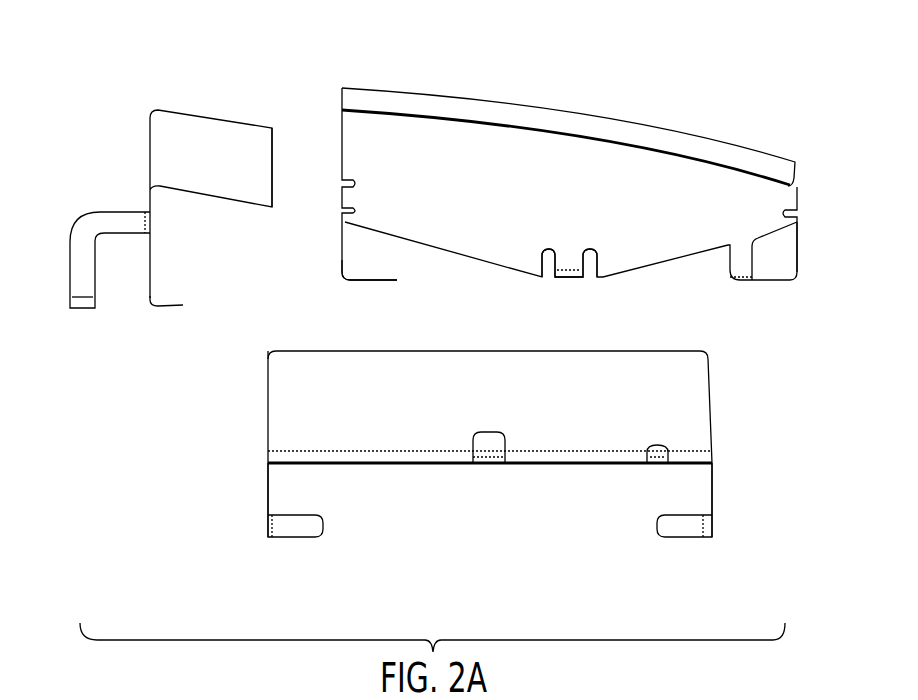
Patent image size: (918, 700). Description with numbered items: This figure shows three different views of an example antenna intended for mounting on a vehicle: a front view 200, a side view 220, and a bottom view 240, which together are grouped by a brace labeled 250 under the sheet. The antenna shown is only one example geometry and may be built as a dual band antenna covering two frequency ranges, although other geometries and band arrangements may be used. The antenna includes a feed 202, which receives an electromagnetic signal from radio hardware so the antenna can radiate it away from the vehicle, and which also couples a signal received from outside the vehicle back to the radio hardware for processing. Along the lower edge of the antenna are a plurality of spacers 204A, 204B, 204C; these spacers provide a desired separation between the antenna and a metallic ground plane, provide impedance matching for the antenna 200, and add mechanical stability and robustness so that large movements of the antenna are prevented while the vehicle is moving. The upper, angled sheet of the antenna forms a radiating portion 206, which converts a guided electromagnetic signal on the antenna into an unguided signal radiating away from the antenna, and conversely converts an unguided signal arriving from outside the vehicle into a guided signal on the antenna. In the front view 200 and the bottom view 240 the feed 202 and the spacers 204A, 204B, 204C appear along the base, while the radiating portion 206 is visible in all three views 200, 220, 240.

The front view 200 is at (672, 65).
The feed 202 is at (580, 278).
The spacer 204A is at (370, 281).
The spacer 204B is at (748, 281).
The spacer 204C is at (658, 448).
The radiating portion 206 is at (155, 107).
The side view 220 is at (230, 108).
The bottom view 240 is at (726, 419).
The bracket set 250 is at (695, 699).